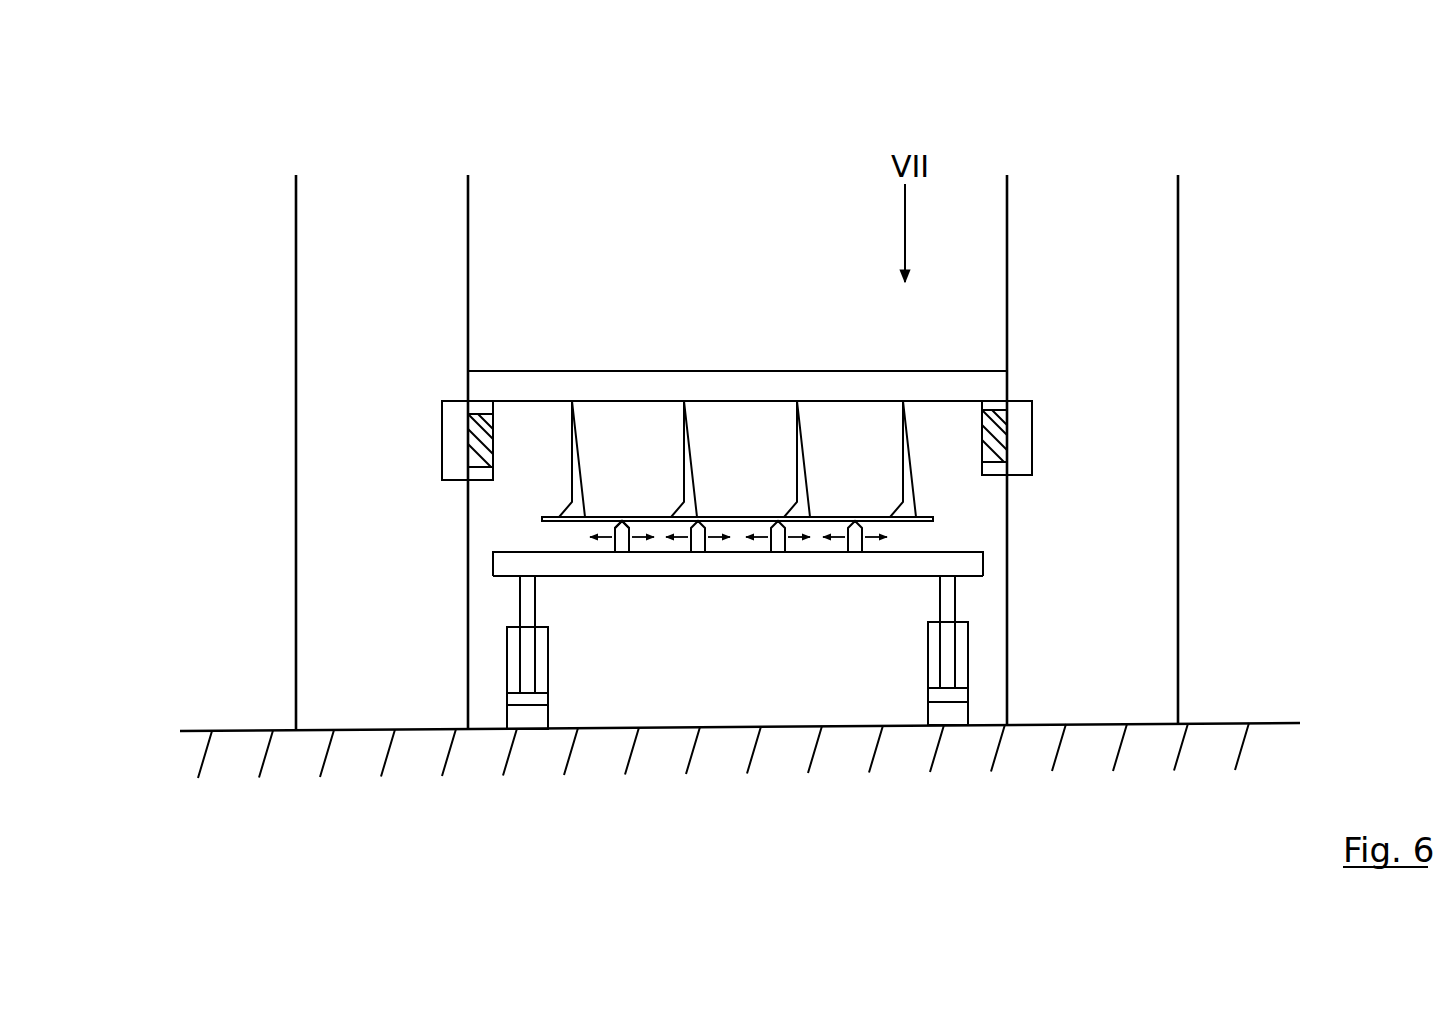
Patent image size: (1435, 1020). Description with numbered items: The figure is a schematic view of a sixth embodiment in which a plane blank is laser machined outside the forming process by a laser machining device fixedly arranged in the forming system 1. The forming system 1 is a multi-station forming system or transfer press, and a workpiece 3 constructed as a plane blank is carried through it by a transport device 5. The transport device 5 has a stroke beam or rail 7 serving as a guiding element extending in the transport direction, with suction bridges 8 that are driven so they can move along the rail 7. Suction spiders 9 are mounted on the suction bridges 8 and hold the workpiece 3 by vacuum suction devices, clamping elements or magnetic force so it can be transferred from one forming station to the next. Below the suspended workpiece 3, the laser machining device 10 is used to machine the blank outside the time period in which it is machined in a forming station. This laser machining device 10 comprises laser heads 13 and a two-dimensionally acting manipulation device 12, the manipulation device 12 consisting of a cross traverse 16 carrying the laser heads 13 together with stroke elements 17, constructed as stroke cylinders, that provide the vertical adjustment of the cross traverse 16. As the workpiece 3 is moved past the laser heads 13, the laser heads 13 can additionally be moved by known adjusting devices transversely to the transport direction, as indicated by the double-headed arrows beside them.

The forming system 1 is at (785, 200).
The workpiece 3 is at (618, 523).
The transport device 5 is at (448, 382).
The rail 7 is at (450, 457).
The suction bridge 8 is at (650, 387).
The suction spider 9 is at (685, 437).
The laser machining device 10 is at (972, 543).
The manipulation device 12 is at (497, 610).
The laser head 13 is at (624, 525).
The cross traverse 16 is at (653, 568).
The stroke element 17 is at (528, 663).